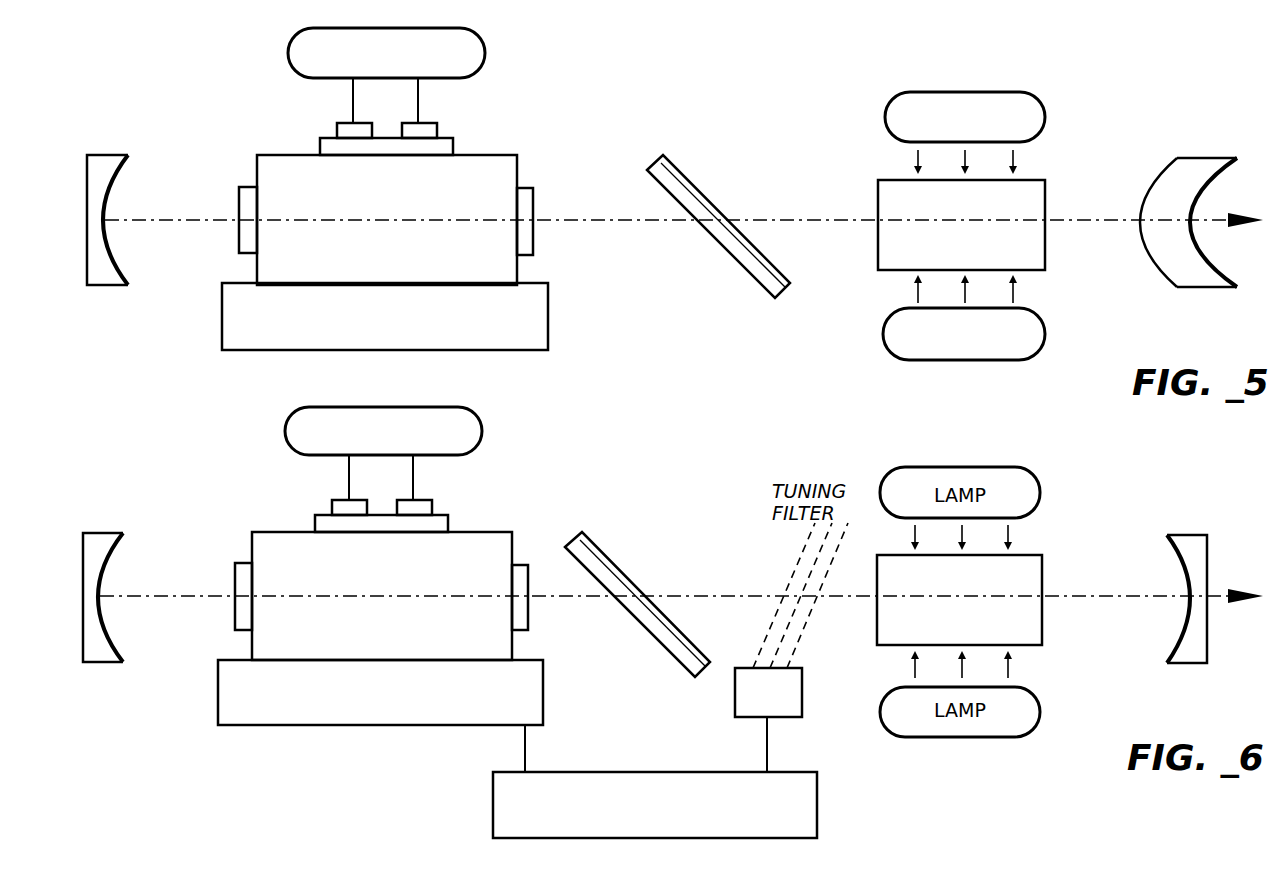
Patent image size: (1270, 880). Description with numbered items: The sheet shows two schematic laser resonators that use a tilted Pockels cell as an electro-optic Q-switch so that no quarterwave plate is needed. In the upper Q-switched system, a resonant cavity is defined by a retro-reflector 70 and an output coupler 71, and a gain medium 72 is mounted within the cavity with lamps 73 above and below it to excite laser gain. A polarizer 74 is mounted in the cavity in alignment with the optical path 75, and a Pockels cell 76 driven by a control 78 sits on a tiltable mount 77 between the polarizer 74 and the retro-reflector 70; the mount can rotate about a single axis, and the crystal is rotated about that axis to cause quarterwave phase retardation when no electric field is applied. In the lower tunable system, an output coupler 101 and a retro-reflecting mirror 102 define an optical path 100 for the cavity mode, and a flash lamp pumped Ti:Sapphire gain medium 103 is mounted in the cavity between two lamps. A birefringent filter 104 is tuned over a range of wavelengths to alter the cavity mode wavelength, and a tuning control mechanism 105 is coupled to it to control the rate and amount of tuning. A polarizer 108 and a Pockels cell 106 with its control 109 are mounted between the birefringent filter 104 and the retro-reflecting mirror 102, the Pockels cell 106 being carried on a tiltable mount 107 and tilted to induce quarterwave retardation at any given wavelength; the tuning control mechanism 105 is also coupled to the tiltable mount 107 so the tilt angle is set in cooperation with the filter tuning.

In FIG. 5, the retro-reflector 70 is at (112, 156).
In FIG. 5, the output coupler 71 is at (1197, 158).
In FIG. 5, the gain medium 72 is at (888, 182).
In FIG. 5, the lamps 73 is at (900, 92).
In FIG. 5, the polarizer 74 is at (672, 168).
In FIG. 5, the optical path 75 is at (565, 222).
In FIG. 5, the Pockels cell 76 is at (517, 155).
In FIG. 5, the tiltable mount 77 is at (507, 352).
In FIG. 5, the control 78 is at (485, 46).
In FIG. 6, the optical path 100 is at (1075, 597).
In FIG. 6, the output coupler 101 is at (1193, 535).
In FIG. 6, the retro-reflecting mirror 102 is at (112, 533).
In FIG. 6, the Ti:Sapphire gain medium 103 is at (1043, 612).
In FIG. 6, the birefringent filter 104 is at (802, 706).
In FIG. 6, the tuning control mechanism 105 is at (783, 772).
In FIG. 6, the Pockels cell 106 is at (483, 537).
In FIG. 6, the tiltable mount 107 is at (258, 727).
In FIG. 6, the polarizer 108 is at (592, 543).
In FIG. 6, the control 109 is at (482, 431).